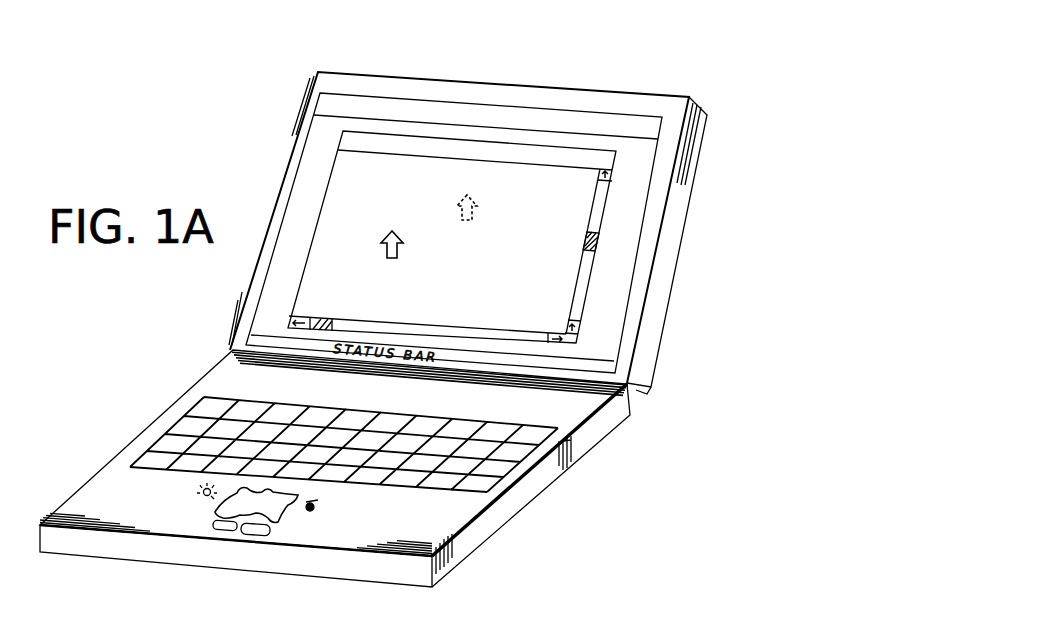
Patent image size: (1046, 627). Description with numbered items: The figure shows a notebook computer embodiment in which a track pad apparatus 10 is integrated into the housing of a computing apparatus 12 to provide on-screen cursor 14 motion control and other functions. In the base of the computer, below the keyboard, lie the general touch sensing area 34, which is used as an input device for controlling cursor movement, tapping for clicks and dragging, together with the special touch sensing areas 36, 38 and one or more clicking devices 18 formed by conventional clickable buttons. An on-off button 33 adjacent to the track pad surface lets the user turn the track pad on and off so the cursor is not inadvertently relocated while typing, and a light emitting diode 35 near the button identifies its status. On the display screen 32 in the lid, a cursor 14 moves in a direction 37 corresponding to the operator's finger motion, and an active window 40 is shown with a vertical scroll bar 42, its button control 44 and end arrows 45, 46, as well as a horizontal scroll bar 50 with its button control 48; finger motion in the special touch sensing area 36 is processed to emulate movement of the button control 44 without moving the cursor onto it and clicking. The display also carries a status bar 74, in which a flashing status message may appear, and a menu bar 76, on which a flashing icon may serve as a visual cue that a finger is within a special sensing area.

The track pad apparatus 10 is at (311, 524).
The computing apparatus 12 is at (600, 432).
The cursor 14 is at (380, 244).
The clicking devices 18 is at (214, 527).
The display screen 32 is at (637, 147).
The on-off button 33 is at (316, 505).
The general touch sensing area 34 is at (269, 513).
The light emitting diode 35 is at (205, 496).
The special touch sensing area 36 is at (275, 492).
The direction 37 is at (410, 238).
The special touch sensing area 38 is at (236, 490).
The active window 40 is at (574, 164).
The vertical scroll bar 42 is at (603, 218).
The button control 44 is at (598, 244).
The end arrow 45 is at (607, 173).
The end arrow 46 is at (580, 326).
The button control 48 is at (327, 317).
The horizontal scroll bar 50 is at (465, 323).
The status bar 74 is at (265, 330).
The menu bar 76 is at (547, 116).